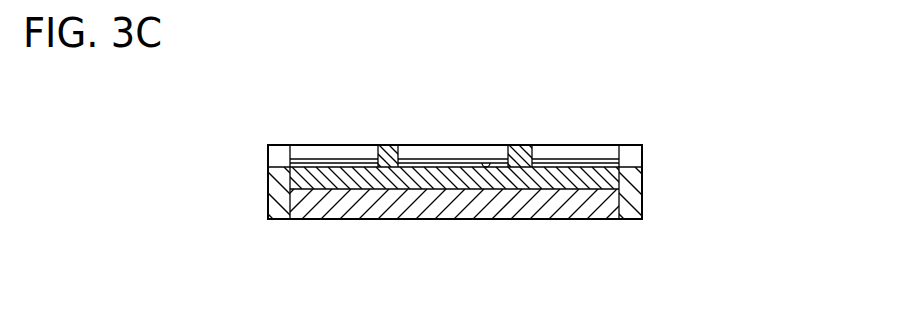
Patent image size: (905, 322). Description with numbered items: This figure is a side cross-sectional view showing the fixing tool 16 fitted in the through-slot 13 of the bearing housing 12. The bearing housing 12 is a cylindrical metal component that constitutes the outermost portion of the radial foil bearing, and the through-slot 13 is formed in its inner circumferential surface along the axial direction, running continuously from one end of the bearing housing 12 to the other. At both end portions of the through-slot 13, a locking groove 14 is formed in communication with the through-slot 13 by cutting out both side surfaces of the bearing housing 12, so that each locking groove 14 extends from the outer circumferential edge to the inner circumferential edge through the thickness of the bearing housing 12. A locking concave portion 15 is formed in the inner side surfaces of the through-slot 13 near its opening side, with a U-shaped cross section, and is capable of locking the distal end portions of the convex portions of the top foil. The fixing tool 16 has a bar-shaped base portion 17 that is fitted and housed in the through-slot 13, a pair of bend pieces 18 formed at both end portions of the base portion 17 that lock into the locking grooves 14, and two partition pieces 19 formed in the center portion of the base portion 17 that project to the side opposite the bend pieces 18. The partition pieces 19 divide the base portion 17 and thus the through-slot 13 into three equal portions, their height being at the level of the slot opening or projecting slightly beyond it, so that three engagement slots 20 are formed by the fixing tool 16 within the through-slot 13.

The bearing housing 12 is at (645, 158).
The through-slot 13 is at (347, 183).
The locking groove 14 is at (276, 145).
The locking concave portion 15 is at (489, 159).
The fixing tool 16 is at (260, 168).
The base portion 17 is at (418, 190).
The bend piece 18 is at (275, 197).
The partition piece 19 is at (387, 145).
The engagement slot 20 is at (336, 159).